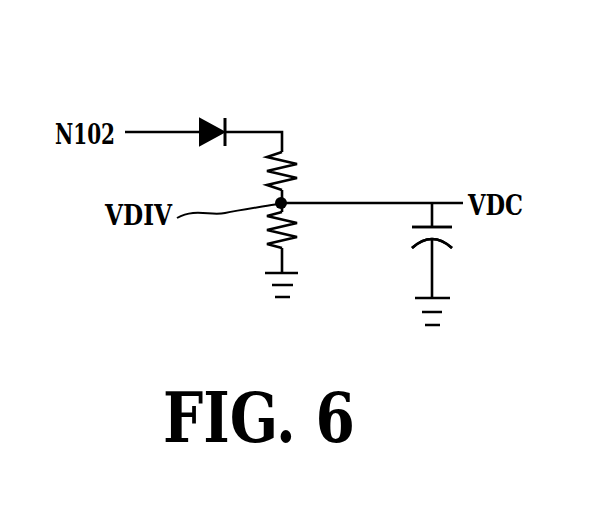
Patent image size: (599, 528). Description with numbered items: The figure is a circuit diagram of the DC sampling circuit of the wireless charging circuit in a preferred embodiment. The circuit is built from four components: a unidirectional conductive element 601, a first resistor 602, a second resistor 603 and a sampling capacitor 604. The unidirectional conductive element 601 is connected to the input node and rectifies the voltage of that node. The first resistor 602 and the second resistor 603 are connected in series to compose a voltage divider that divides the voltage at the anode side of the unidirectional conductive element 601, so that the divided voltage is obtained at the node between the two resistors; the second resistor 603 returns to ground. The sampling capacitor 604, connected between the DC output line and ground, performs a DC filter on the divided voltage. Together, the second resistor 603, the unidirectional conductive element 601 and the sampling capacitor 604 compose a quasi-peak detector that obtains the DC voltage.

The unidirectional conductive element 601 is at (207, 112).
The first resistor 602 is at (305, 171).
The second resistor 603 is at (305, 242).
The sampling capacitor 604 is at (410, 255).